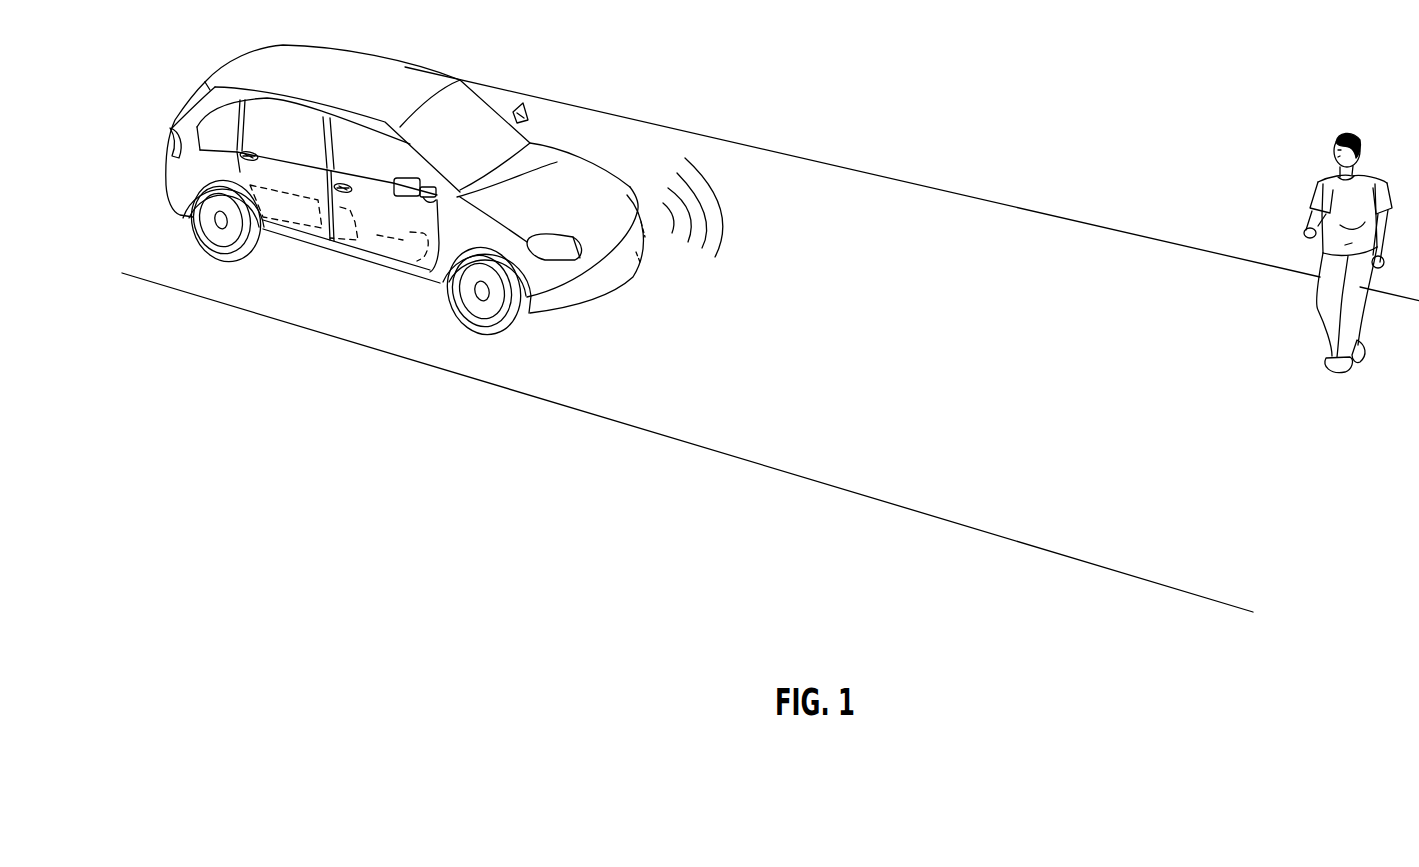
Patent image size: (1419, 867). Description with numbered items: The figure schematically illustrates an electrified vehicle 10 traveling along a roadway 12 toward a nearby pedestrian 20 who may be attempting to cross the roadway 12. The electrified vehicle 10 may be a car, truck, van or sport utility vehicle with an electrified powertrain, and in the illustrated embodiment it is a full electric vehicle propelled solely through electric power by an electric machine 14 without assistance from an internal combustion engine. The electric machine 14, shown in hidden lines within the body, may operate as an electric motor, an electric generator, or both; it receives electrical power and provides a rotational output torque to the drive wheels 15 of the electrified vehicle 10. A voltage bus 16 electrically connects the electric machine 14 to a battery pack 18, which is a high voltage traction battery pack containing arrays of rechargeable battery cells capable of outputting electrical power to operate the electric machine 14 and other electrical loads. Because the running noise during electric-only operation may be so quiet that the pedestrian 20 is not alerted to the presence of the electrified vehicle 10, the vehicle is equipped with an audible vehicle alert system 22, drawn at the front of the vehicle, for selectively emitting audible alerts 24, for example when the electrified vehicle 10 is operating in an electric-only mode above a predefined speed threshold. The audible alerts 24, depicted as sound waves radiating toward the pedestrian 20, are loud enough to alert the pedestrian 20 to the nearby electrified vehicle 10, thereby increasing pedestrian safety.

The electrified vehicle 10 is at (423, 224).
The roadway 12 is at (900, 204).
The electric machine 14 is at (422, 258).
The drive wheels 15 is at (201, 248).
The voltage bus 16 is at (375, 237).
The battery pack 18 is at (302, 218).
The pedestrian 20 is at (1311, 199).
The audible vehicle alert system 22 is at (636, 247).
The audible alerts 24 is at (712, 189).